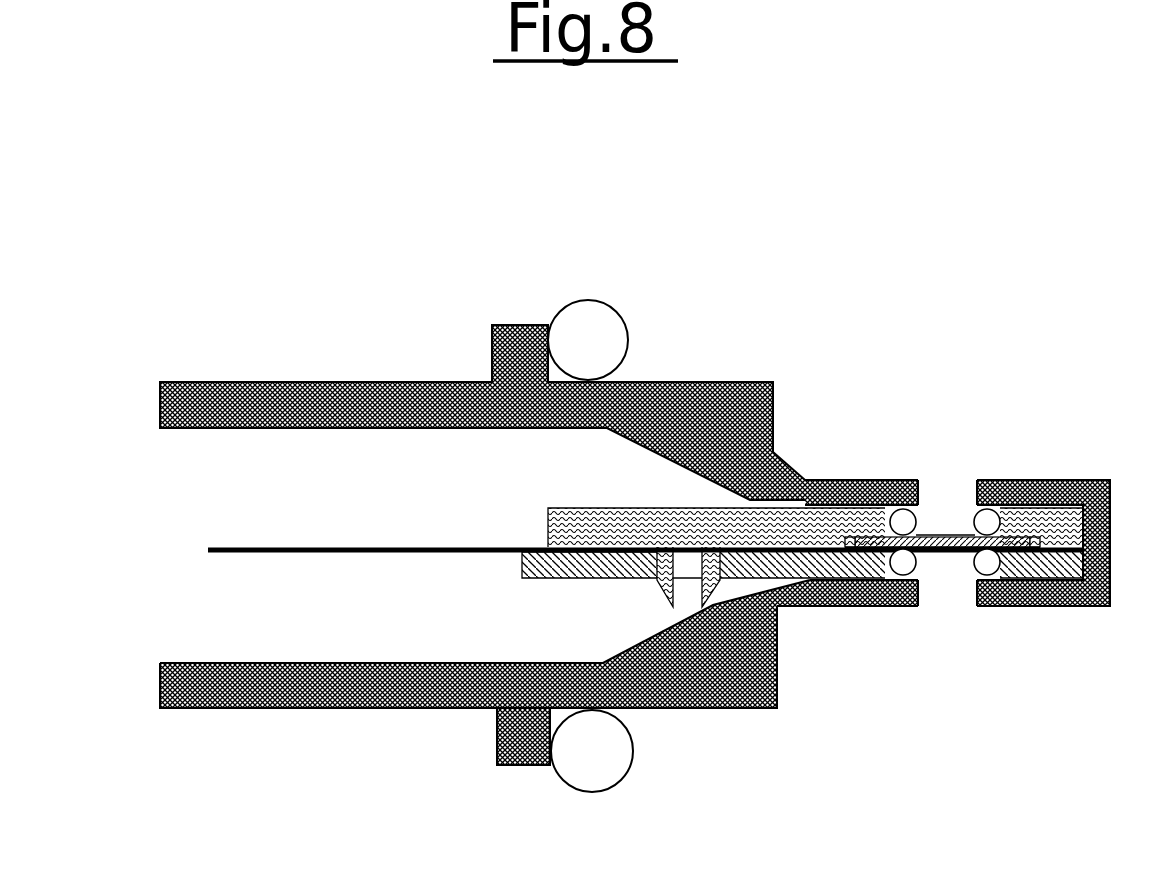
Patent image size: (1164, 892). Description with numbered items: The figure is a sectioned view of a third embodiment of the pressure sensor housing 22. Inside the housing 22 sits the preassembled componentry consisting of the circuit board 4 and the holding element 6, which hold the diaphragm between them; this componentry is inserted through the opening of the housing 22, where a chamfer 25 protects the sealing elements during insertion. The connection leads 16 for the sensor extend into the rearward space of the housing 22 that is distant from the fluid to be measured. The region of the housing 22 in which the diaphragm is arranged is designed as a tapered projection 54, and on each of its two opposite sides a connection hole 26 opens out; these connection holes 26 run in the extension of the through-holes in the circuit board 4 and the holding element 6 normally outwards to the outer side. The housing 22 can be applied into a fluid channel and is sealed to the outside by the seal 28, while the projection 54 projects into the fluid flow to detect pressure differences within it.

The circuit board 4 is at (530, 581).
The holding element 6 is at (560, 507).
The connection leads 16 is at (225, 542).
The housing 22 is at (718, 381).
The chamfer 25 is at (780, 632).
The connection holes 26 is at (950, 488).
The sealing element 28 is at (620, 375).
The tapered projection 54 is at (1090, 480).